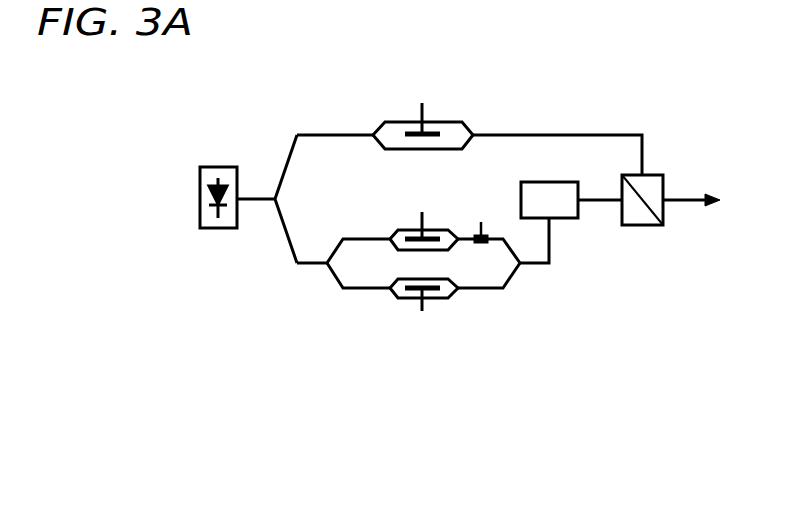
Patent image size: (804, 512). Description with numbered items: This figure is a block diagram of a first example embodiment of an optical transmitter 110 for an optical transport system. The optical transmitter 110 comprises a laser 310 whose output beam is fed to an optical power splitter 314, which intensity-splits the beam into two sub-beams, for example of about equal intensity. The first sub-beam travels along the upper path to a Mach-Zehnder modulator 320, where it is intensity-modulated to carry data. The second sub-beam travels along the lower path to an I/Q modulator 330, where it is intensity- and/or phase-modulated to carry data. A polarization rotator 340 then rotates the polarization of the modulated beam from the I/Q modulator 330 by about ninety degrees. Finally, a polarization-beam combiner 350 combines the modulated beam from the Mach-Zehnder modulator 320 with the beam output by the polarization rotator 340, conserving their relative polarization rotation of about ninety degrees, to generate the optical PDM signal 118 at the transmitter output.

The optical transmitter 110 is at (131, 70).
The laser 310 is at (200, 199).
The optical power splitter 314 is at (272, 190).
The Mach-Zehnder modulator 320 is at (462, 104).
The I/Q modulator 330 is at (371, 309).
The polarization rotator 340 is at (549, 182).
The polarization-beam combiner 350 is at (660, 175).
The optical PDM signal 118 is at (685, 203).